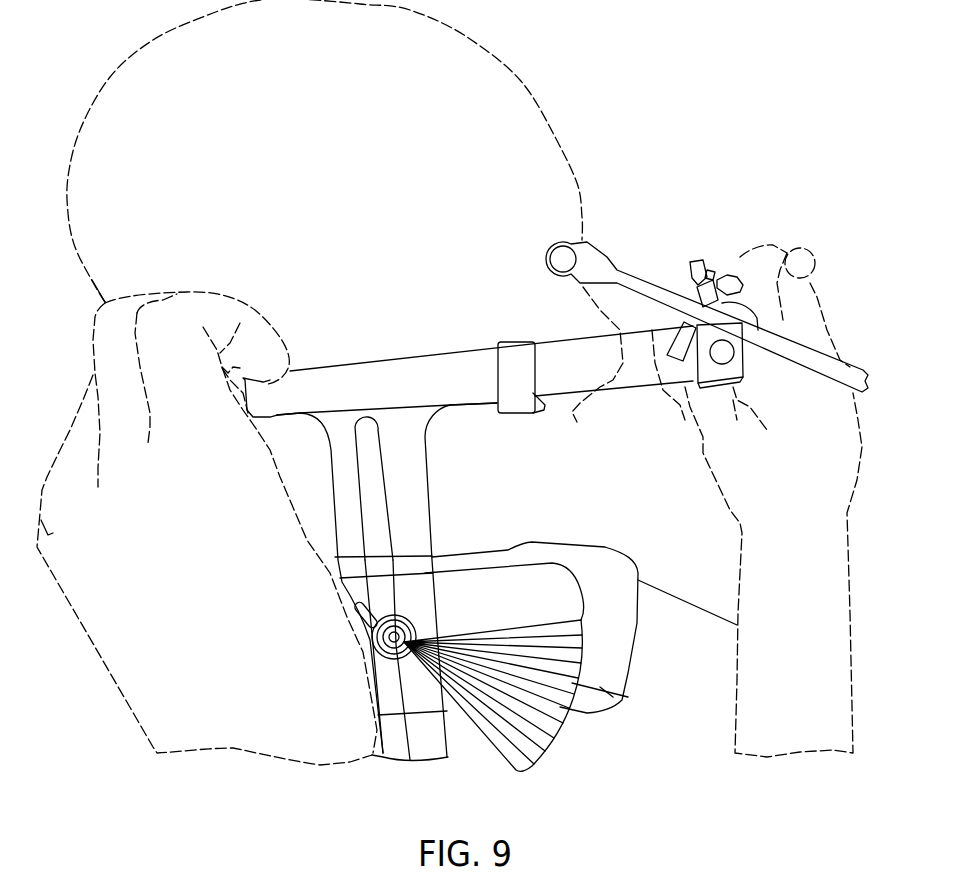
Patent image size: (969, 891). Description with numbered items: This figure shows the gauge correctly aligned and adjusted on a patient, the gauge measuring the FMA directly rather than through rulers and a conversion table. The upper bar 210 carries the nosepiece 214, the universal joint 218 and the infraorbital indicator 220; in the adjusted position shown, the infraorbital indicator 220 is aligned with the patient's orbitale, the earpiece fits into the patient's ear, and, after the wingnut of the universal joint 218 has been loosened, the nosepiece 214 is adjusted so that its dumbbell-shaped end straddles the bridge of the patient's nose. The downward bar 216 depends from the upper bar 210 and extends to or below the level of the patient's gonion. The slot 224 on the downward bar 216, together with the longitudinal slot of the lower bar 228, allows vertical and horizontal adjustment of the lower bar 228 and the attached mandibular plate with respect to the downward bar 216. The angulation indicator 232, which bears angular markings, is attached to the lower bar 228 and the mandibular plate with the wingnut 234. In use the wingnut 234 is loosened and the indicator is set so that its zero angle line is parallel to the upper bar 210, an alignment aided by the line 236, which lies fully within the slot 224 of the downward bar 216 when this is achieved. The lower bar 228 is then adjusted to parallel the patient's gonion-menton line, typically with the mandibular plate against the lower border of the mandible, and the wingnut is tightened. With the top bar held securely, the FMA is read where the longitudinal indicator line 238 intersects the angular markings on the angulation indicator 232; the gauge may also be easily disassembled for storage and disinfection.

The upper bar 210 is at (383, 368).
The nosepiece 214 is at (847, 365).
The downward bar 216 is at (345, 492).
The universal joint 218 is at (778, 273).
The infraorbital indicator 220 is at (520, 340).
The slot 224 is at (380, 512).
The lower bar 228 is at (627, 603).
The angulation indicator 232 is at (537, 740).
The wingnut 234 is at (398, 647).
The line 236 is at (392, 584).
The longitudinal indicator line 238 is at (612, 697).